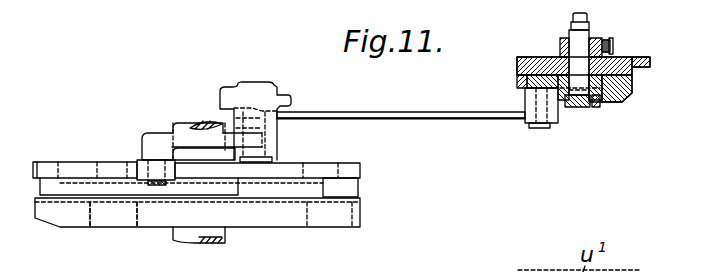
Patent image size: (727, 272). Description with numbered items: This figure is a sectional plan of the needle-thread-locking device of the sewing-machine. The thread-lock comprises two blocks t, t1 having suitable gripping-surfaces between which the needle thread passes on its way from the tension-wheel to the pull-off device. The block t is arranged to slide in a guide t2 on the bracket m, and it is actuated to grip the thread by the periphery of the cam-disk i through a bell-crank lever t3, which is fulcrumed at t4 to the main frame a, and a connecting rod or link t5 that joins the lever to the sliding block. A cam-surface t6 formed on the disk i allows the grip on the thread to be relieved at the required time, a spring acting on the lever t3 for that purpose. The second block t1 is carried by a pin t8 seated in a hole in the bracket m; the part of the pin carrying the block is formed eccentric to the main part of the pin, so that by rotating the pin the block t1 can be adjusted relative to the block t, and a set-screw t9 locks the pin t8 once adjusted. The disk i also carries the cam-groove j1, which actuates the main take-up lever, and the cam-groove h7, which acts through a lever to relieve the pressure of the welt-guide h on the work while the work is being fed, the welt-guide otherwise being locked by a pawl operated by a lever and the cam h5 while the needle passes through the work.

The main frame a is at (290, 96).
The block t is at (609, 98).
The block t1 is at (590, 110).
The guide t2 is at (523, 80).
The bell-crank lever t3 is at (162, 130).
The fulcrum t4 is at (262, 140).
The connecting rod t5 is at (421, 113).
The cam-surface t6 is at (65, 173).
The pin t8 is at (582, 42).
The set-screw t9 is at (613, 48).
The bracket m is at (653, 65).
The welt-guide h is at (191, 244).
The cam h5 is at (355, 188).
The cam-groove h7 is at (322, 172).
The cam-disk i is at (263, 229).
The cam-groove j1 is at (118, 232).